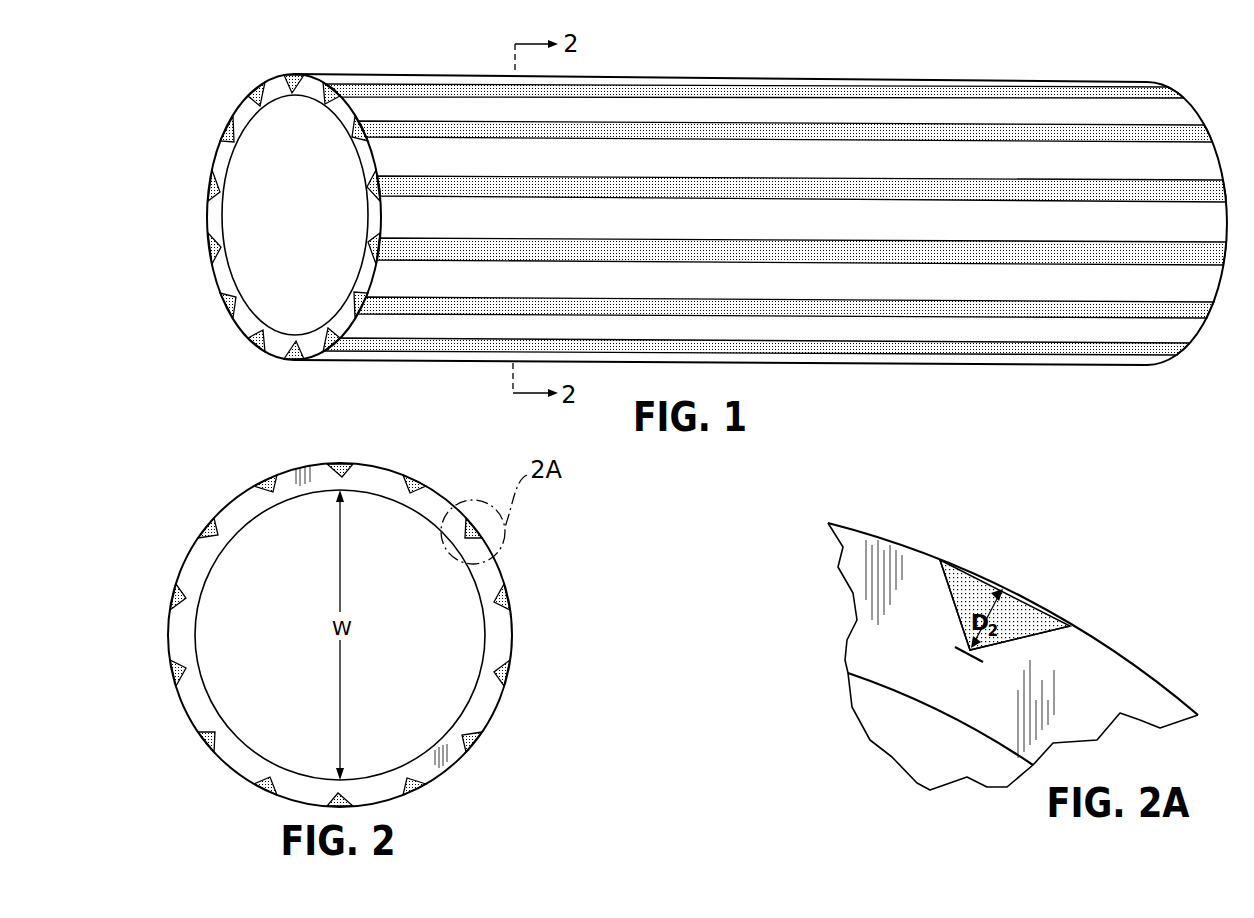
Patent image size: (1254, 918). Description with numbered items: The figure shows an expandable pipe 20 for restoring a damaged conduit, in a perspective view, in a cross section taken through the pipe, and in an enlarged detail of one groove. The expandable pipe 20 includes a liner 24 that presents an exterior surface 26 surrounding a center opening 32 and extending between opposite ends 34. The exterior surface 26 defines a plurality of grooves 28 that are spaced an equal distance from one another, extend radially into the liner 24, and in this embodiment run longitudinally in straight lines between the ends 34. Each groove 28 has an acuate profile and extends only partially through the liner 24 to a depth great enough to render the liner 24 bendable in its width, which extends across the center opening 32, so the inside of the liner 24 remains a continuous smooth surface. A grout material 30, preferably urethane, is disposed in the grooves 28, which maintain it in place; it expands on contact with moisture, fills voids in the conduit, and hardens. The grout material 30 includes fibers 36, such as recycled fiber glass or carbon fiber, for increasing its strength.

In FIG. 1, the expandable pipe 20 is at (686, 220).
In FIG. 1, the liner 24 is at (763, 72).
In FIG. 2, the liner 24 is at (343, 609).
In FIG. 1, the exterior surface 26 is at (383, 81).
In FIG. 2, the exterior surface 26 is at (504, 572).
In FIG. 2A, the exterior surface 26 is at (933, 552).
In FIG. 1, the grooves 28 is at (308, 86).
In FIG. 2, the grooves 28 is at (268, 485).
In FIG. 2A, the grooves 28 is at (1040, 632).
In FIG. 1, the grout material 30 is at (212, 186).
In FIG. 2, the grout material 30 is at (340, 463).
In FIG. 2A, the grout material 30 is at (972, 580).
In FIG. 1, the center opening 32 is at (284, 234).
In FIG. 2, the center opening 32 is at (289, 644).
In FIG. 2A, the center opening 32 is at (922, 758).
In FIG. 1, the ends 34 is at (296, 78).
In FIG. 2A, the fibers 36 is at (1017, 632).